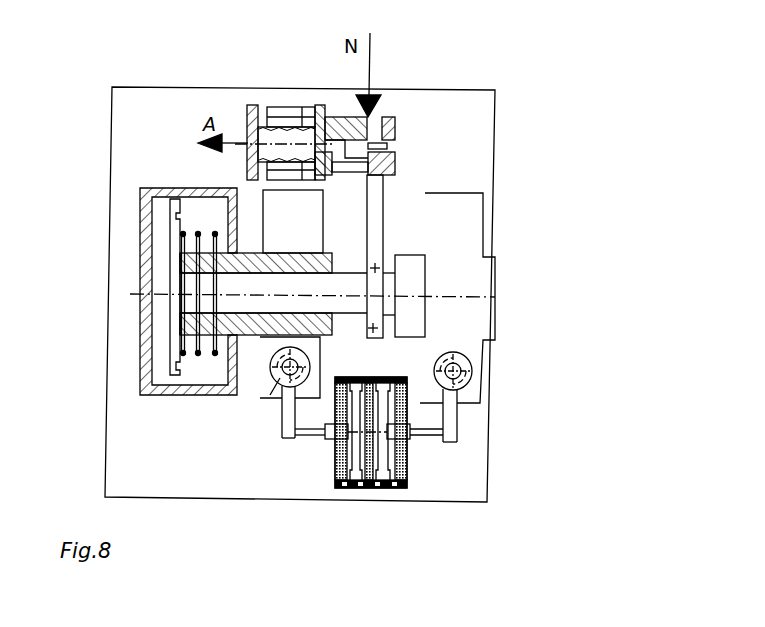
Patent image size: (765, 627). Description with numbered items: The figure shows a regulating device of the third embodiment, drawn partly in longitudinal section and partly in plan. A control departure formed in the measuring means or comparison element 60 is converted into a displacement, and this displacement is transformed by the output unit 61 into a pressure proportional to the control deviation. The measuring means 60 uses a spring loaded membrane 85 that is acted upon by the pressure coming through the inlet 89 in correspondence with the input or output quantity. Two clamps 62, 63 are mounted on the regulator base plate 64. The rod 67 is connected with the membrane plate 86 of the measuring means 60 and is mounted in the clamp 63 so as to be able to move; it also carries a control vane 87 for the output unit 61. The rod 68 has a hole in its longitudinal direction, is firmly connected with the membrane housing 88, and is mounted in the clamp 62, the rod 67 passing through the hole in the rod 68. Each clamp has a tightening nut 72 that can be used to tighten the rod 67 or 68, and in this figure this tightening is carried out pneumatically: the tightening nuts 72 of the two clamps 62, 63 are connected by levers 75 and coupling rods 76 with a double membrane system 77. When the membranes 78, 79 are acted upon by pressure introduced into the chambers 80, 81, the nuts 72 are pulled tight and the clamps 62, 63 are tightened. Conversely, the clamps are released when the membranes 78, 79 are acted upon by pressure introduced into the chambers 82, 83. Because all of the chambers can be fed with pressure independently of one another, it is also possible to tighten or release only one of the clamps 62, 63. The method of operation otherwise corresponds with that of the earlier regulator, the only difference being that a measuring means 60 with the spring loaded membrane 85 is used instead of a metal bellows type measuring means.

The measuring means 60 is at (170, 130).
The output unit 61 is at (306, 98).
The clamp 62 is at (254, 199).
The clamp 63 is at (457, 160).
The regulator base plate 64 is at (183, 433).
The rod 67 is at (210, 298).
The rod 68 is at (258, 330).
The tightening nut 72 is at (277, 385).
The lever 75 is at (287, 440).
The coupling rod 76 is at (310, 432).
The double membrane system 77 is at (384, 491).
The membrane 78 is at (348, 460).
The membrane 79 is at (395, 460).
The chamber 80 is at (357, 440).
The chamber 81 is at (376, 462).
The chamber 82 is at (355, 440).
The chamber 83 is at (392, 413).
The spring loaded membrane 85 is at (180, 215).
The membrane plate 86 is at (182, 242).
The control vane 87 is at (373, 243).
The membrane housing 88 is at (177, 187).
The inlet 89 is at (146, 291).